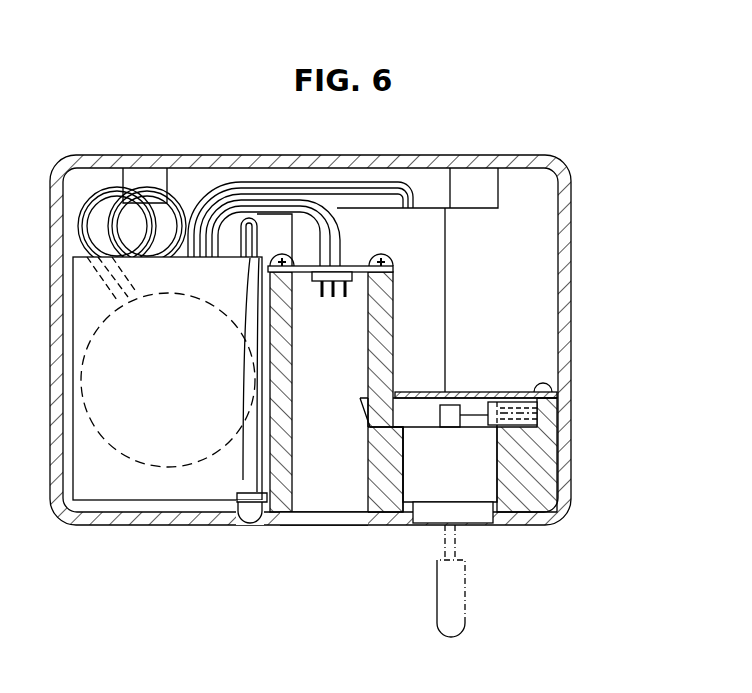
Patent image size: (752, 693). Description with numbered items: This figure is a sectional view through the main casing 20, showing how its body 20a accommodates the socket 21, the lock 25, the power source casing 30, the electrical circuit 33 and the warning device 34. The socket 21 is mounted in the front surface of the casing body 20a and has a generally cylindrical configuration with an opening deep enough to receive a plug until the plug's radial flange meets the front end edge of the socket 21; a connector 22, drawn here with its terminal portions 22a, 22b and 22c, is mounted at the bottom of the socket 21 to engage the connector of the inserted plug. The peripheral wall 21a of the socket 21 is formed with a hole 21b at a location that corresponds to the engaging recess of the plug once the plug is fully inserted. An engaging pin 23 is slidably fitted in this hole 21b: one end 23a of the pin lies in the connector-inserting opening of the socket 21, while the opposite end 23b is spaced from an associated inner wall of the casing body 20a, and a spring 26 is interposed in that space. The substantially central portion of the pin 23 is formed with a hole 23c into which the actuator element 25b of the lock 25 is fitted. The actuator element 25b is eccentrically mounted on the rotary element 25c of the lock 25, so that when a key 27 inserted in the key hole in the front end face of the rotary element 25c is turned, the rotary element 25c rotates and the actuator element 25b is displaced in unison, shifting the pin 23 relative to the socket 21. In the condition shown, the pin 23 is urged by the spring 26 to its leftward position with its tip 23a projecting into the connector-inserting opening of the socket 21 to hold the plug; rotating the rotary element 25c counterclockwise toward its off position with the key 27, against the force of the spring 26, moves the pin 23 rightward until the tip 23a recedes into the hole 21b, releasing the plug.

The main casing 20 is at (563, 222).
The casing body 20a is at (563, 292).
The socket 21 is at (393, 288).
The peripheral wall 21a is at (370, 498).
The hole 21b is at (392, 418).
The connector 22 is at (342, 275).
The terminal pin 22a is at (347, 293).
The terminal pin 22b is at (323, 292).
The terminal pin 22c is at (336, 300).
The engaging pin 23 is at (390, 463).
The end of the engaging pin 23a is at (361, 401).
The opposite end of the engaging pin 23b is at (483, 415).
The hole 23c is at (437, 410).
The lock 25 is at (416, 534).
The actuator element 25b is at (458, 417).
The rotary element 25c is at (471, 519).
The spring 26 is at (520, 428).
The key 27 is at (458, 606).
The power source casing 30 is at (427, 225).
The electrical circuit 33 is at (167, 488).
The warning device 34 is at (121, 431).